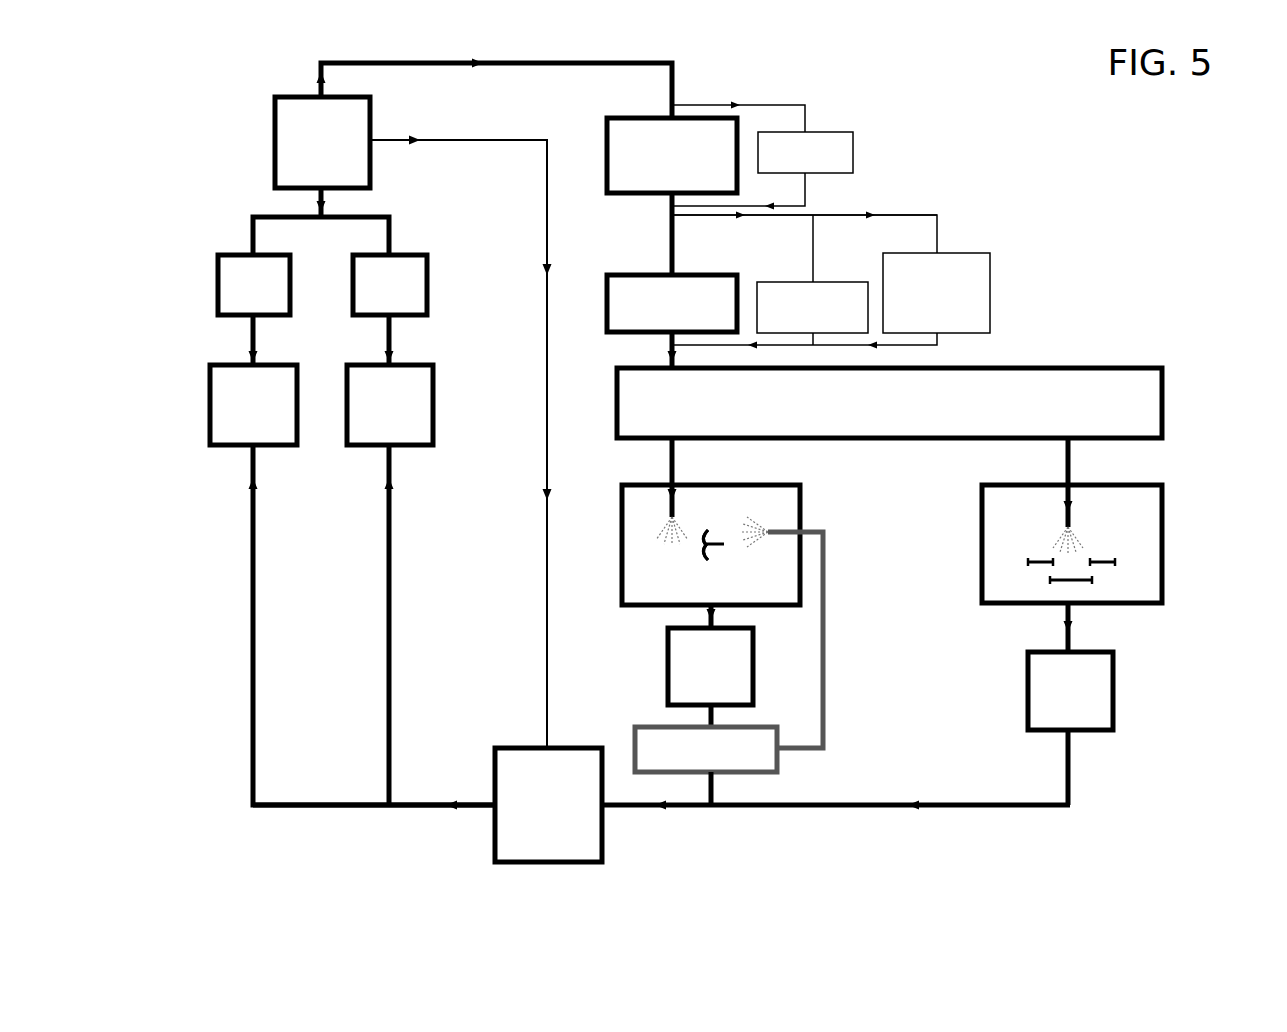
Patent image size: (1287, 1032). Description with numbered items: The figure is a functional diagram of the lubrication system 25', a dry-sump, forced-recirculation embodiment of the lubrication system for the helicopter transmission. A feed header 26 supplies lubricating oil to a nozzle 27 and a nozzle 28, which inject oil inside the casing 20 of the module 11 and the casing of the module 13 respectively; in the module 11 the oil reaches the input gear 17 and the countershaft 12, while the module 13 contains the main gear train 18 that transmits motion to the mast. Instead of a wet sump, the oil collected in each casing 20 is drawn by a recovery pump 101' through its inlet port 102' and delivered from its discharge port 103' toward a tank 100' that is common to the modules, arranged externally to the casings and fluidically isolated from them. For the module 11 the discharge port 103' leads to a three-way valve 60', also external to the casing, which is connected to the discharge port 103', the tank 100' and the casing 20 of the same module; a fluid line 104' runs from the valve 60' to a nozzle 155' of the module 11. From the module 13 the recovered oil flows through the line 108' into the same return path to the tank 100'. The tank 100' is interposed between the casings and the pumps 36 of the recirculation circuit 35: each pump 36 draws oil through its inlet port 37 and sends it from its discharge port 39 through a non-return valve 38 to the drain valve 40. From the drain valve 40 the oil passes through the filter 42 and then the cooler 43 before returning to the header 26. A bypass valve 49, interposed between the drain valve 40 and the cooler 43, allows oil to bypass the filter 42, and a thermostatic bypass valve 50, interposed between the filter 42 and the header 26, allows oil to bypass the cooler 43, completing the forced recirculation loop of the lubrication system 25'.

The drain valve 40 is at (290, 140).
The non-return valve 38 is at (232, 282).
The discharge port 39 is at (240, 356).
The pump 36 is at (228, 412).
The inlet port 37 is at (378, 448).
The recirculation circuit 35 is at (430, 826).
The filter 42 is at (615, 137).
The cooler 43 is at (625, 282).
The bypass valve 49 is at (838, 152).
The thermostatic bypass valve 50 is at (828, 292).
The lubrication system 25' is at (836, 143).
The feed header 26 is at (1168, 370).
The casing 20 is at (644, 493).
The nozzle 27 is at (678, 512).
The module 11 is at (820, 506).
The nozzle 155' is at (771, 496).
The countershaft 12 is at (712, 540).
The input gear 17 is at (702, 548).
The inlet port 102' is at (891, 631).
The recovery pump 101' is at (889, 679).
The discharge port 103' is at (644, 708).
The three-way valve 60' is at (712, 794).
The fluid line 104' is at (834, 640).
The tank 100' is at (573, 831).
The nozzle 28 is at (1065, 520).
The module 13 is at (1180, 496).
The main gear train 18 is at (1026, 585).
The return line 108' is at (1123, 767).